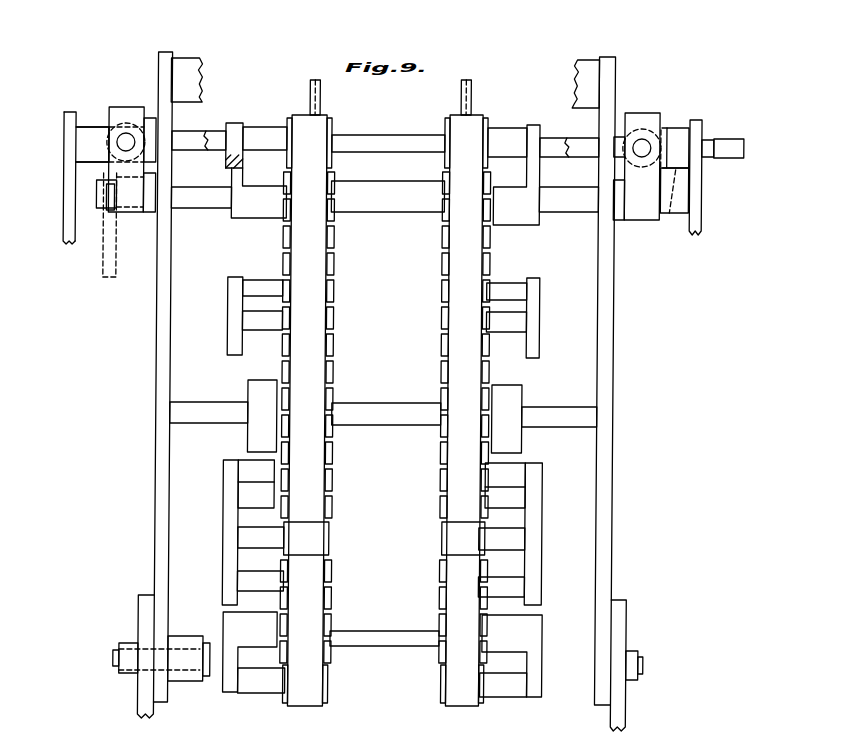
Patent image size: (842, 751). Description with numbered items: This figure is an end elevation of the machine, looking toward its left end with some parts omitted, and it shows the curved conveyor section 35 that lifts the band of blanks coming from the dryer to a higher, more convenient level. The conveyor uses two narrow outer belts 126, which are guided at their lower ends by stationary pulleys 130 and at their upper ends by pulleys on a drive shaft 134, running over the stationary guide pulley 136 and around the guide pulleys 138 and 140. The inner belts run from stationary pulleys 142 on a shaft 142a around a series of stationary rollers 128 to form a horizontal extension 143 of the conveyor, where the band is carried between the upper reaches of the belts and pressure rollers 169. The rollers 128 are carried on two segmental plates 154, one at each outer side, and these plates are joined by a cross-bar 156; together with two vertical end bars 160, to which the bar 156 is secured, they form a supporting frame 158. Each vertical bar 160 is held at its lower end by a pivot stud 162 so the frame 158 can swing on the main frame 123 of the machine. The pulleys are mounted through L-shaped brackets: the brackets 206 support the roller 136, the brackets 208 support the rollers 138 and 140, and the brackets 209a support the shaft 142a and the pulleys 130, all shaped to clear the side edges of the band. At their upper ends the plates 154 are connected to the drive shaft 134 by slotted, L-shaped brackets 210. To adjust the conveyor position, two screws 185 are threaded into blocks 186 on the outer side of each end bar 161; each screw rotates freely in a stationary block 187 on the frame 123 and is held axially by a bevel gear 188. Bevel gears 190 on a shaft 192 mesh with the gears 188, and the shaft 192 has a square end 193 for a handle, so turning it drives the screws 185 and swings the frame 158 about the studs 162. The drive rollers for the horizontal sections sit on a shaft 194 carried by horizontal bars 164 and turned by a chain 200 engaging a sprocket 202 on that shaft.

The curved conveyor section 35 is at (455, 712).
The main frame 123 is at (65, 200).
The outer belts 126 is at (444, 369).
The stationary rollers 128 is at (444, 490).
The stationary pulleys 130 is at (449, 677).
The drive shaft 134 is at (371, 141).
The stationary guide pulley 136 is at (444, 290).
The guide pulley 138 is at (449, 547).
The guide pulley 140 is at (444, 590).
The stationary pulleys 142 is at (444, 626).
The shaft 142a is at (391, 642).
The horizontal extension 143 is at (306, 113).
The segmental plates 154 is at (280, 472).
The cross-bar 156 is at (363, 412).
The supporting frame 158 is at (150, 452).
The vertical end bars 160 is at (162, 382).
The end bar 161 is at (153, 212).
The pivot stud 162 is at (199, 682).
The horizontal bars 164 is at (193, 66).
The pressure rollers 169 is at (312, 97).
The screws 185 is at (126, 139).
The blocks 186 is at (129, 108).
The stationary block 187 is at (103, 127).
The bevel gear 188 is at (110, 141).
The bevel gears 190 is at (158, 130).
The shaft 192 is at (191, 150).
The square end 193 is at (732, 140).
The shaft 194 is at (386, 207).
The chain 200 is at (106, 268).
The sprocket 202 is at (106, 213).
The brackets 206 is at (232, 337).
The brackets 208 is at (228, 545).
The bracket 209a is at (238, 694).
The brackets 210 is at (232, 200).